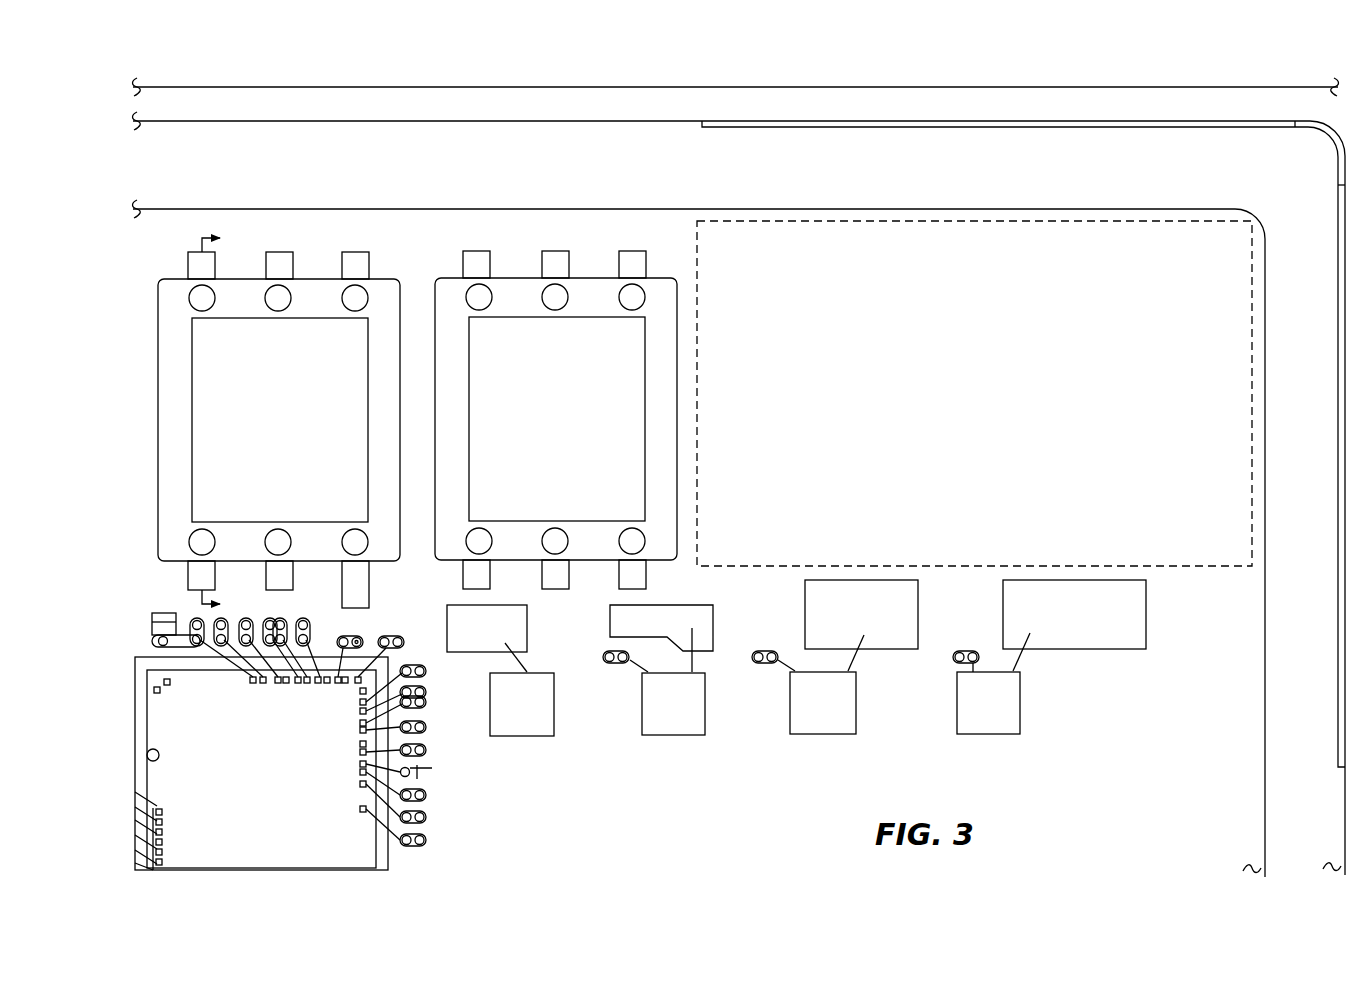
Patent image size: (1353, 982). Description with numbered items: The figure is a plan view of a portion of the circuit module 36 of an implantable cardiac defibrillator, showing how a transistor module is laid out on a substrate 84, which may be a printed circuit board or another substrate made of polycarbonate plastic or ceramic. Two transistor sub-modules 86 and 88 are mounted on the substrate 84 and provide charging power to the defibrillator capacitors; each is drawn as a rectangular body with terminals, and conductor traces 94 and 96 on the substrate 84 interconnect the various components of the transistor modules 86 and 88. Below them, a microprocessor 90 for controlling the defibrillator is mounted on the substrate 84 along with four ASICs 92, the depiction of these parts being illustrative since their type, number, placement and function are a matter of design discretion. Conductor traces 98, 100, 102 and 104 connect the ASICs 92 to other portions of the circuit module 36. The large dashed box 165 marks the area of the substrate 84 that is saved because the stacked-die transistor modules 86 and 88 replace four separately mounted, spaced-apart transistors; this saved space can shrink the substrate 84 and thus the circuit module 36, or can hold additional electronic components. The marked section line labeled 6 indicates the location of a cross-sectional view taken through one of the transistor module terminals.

The circuit module 36 is at (710, 163).
The substrate 84 is at (905, 208).
The dashed box 165 is at (1120, 218).
The transistor module 86 is at (328, 276).
The transistor module 88 is at (521, 275).
The conductor traces 94 is at (358, 251).
The conductor traces 96 is at (632, 249).
The microprocessor 90 is at (277, 778).
The ASICs 92 is at (537, 716).
The conductor trace 98 is at (500, 642).
The conductor trace 100 is at (680, 631).
The conductor trace 102 is at (887, 634).
The conductor trace 104 is at (1099, 628).
The section line 6- 6 is at (222, 424).